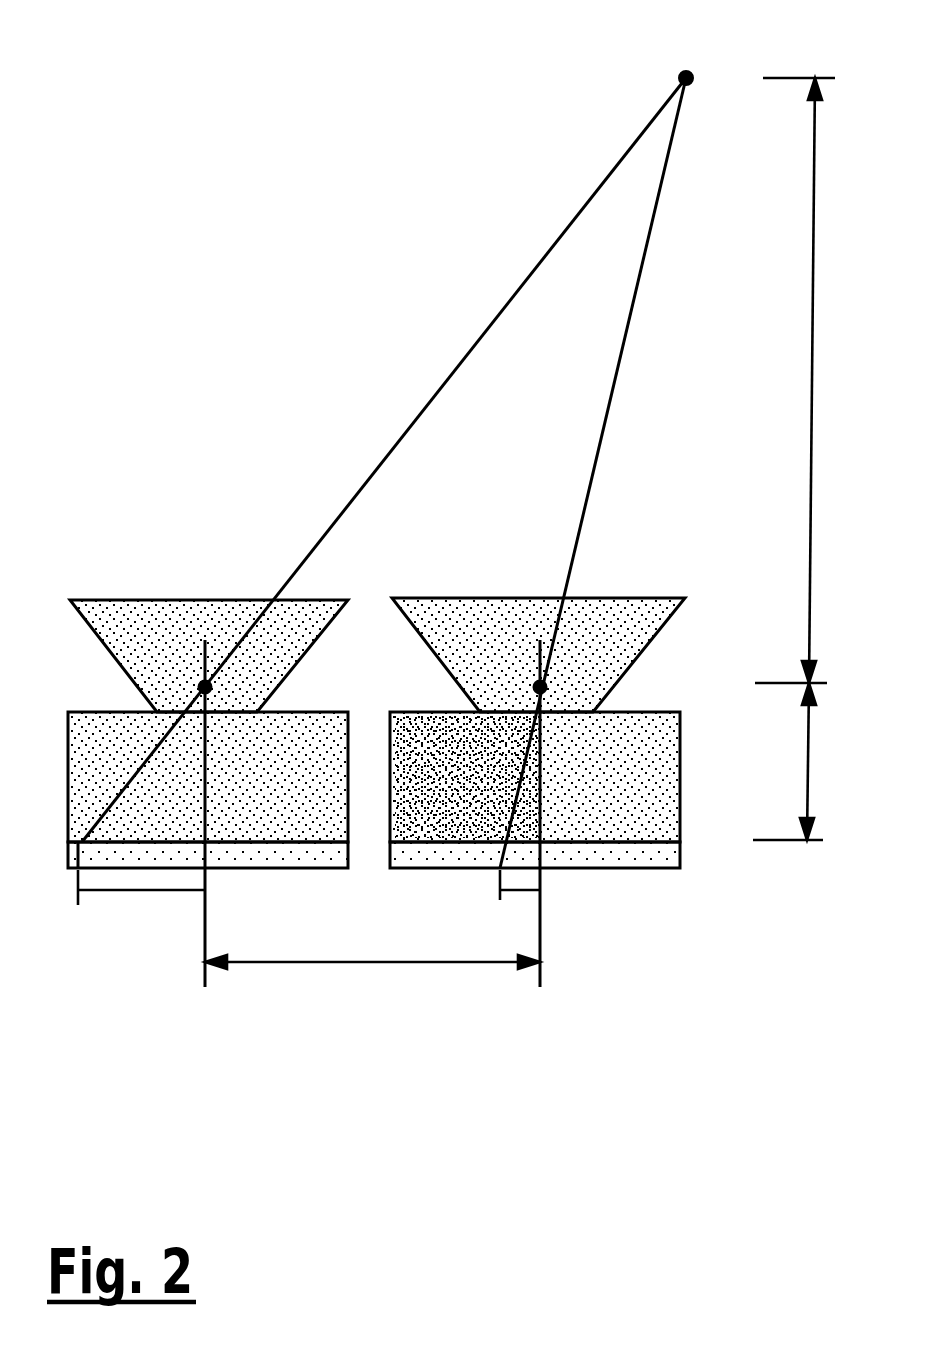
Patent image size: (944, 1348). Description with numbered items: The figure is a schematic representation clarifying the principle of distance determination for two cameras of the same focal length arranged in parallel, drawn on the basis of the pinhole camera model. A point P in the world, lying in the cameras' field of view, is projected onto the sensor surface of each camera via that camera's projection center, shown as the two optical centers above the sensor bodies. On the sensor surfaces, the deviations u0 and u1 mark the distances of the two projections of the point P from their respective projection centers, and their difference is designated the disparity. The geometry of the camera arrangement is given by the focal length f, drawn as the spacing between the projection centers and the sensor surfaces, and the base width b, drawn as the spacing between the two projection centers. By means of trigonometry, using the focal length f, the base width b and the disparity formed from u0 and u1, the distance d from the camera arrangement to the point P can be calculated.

The point P is at (407, 442).
The distance d is at (816, 380).
The focal length f is at (805, 761).
The base width b is at (372, 995).
The deviation from the projection center u0 is at (141, 906).
The deviation from the projection center u1 is at (497, 903).